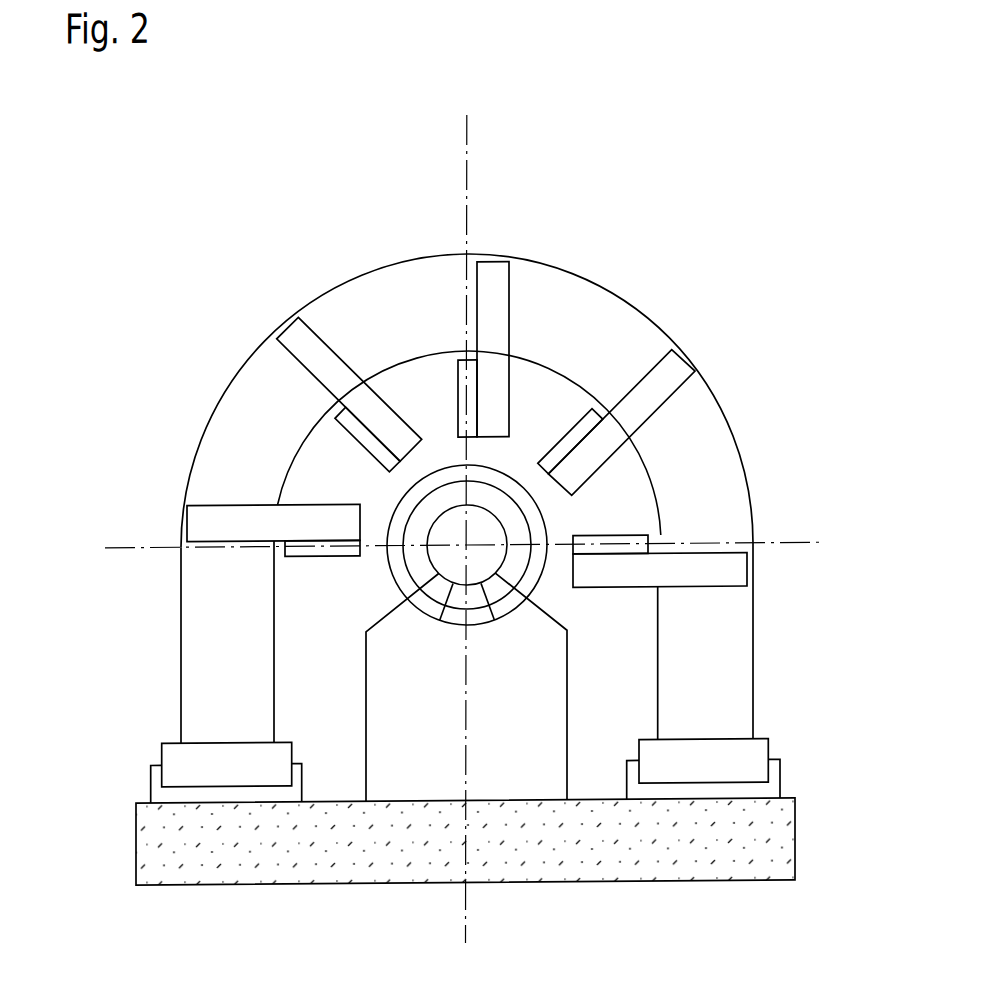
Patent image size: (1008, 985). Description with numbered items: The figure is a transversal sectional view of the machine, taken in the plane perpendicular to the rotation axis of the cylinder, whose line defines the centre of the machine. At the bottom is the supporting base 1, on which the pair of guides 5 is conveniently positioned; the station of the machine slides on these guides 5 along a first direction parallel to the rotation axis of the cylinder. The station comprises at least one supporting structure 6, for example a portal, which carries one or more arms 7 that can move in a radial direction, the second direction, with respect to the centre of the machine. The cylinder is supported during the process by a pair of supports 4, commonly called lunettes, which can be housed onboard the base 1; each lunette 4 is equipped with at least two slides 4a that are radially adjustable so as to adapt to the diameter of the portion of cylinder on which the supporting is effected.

The supporting base 1 is at (356, 848).
The supports 4 is at (515, 733).
The slides 4a is at (438, 588).
The guides 5 is at (180, 793).
The supporting structure 6 is at (572, 329).
The arms 7 is at (307, 334).